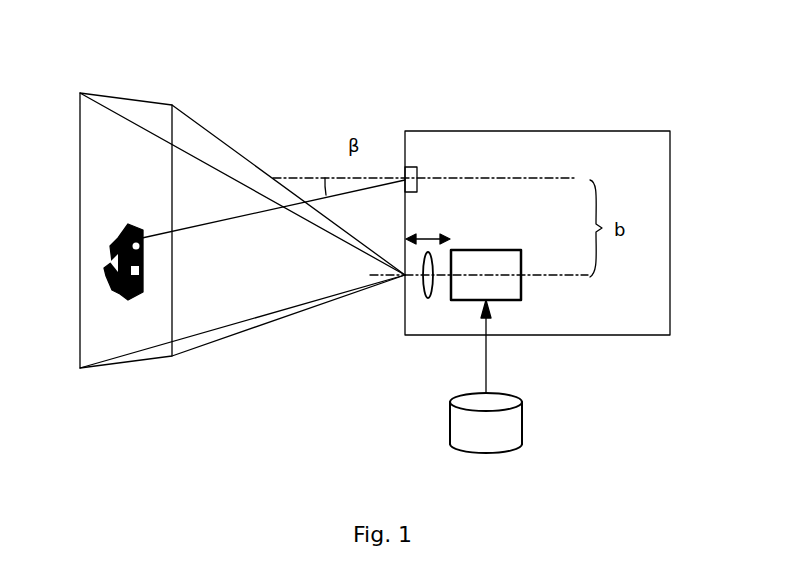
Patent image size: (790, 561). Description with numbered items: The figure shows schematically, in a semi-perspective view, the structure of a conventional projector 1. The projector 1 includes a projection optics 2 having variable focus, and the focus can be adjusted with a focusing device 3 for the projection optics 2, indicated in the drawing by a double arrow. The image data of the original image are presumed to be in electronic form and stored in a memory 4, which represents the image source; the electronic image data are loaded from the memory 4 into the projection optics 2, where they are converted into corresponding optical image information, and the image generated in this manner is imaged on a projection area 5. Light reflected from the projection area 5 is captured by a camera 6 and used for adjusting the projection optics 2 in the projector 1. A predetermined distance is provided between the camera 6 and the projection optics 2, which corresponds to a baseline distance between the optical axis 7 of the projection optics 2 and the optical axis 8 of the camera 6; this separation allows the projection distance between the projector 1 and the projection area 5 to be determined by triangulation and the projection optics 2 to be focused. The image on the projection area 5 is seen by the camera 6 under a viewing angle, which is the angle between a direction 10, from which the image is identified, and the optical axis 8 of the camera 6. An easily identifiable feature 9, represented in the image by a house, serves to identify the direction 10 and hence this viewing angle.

The projector 1 is at (568, 131).
The projection optics 2 is at (522, 298).
The focusing device 3 is at (426, 300).
The memory 4 is at (522, 418).
The projection area 5 is at (126, 92).
The camera 6 is at (418, 165).
The optical axis of the projection optics 7 is at (590, 278).
The optical axis of the camera 8 is at (580, 181).
The feature 9 is at (148, 268).
The direction 10 is at (254, 214).